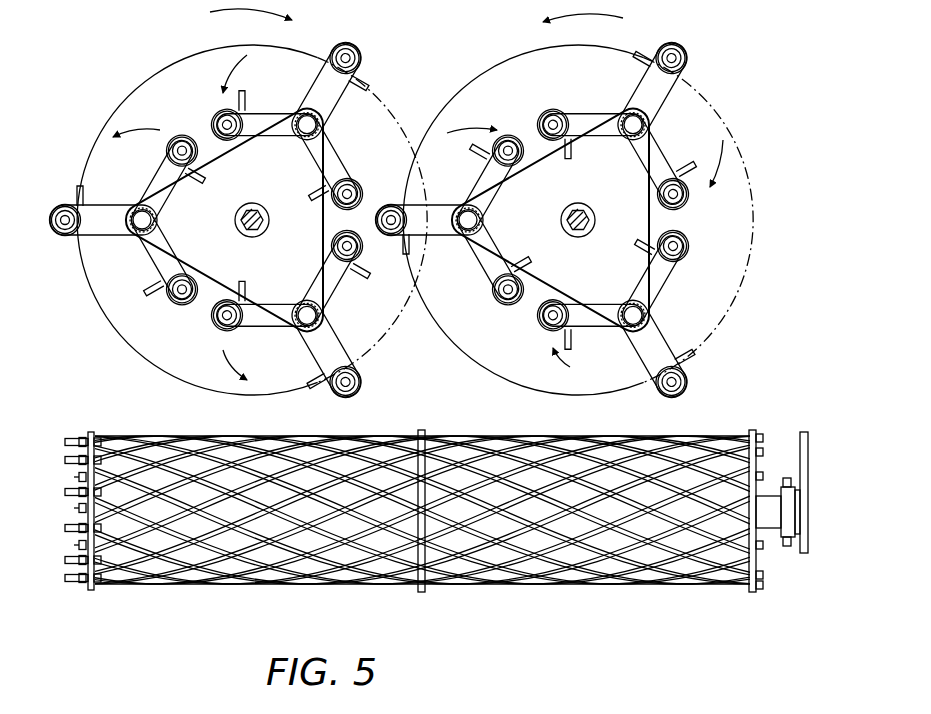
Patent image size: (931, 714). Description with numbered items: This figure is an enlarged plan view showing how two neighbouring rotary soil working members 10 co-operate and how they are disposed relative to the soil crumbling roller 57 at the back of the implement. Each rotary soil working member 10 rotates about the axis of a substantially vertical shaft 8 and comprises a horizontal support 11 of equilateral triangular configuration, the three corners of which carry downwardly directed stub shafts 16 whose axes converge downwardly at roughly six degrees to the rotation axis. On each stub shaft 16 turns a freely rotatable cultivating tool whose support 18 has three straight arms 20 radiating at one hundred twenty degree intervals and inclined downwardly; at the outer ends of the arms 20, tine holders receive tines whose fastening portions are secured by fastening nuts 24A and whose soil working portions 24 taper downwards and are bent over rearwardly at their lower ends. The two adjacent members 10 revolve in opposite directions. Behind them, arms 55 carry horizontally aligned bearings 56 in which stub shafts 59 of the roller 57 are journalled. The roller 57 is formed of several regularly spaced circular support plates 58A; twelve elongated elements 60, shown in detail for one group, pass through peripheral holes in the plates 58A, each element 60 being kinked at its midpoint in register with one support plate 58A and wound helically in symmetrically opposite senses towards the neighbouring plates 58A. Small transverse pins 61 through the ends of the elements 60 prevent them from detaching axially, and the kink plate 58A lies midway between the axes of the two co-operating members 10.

The shaft 8 is at (244, 206).
The rotary soil working member 10 is at (158, 72).
The support 11 is at (217, 294).
The stub shaft 16 is at (304, 133).
The support 18 is at (343, 148).
The arm 20 is at (268, 112).
The soil working portion 24 is at (368, 84).
The fastening nut 24A is at (360, 45).
The arm 55 is at (803, 432).
The bearing 56 is at (790, 540).
The roller 57 is at (562, 586).
The support plate 58A is at (92, 432).
The stub shaft 59 is at (768, 545).
The elongated element 60 is at (333, 573).
The transverse pin 61 is at (106, 440).